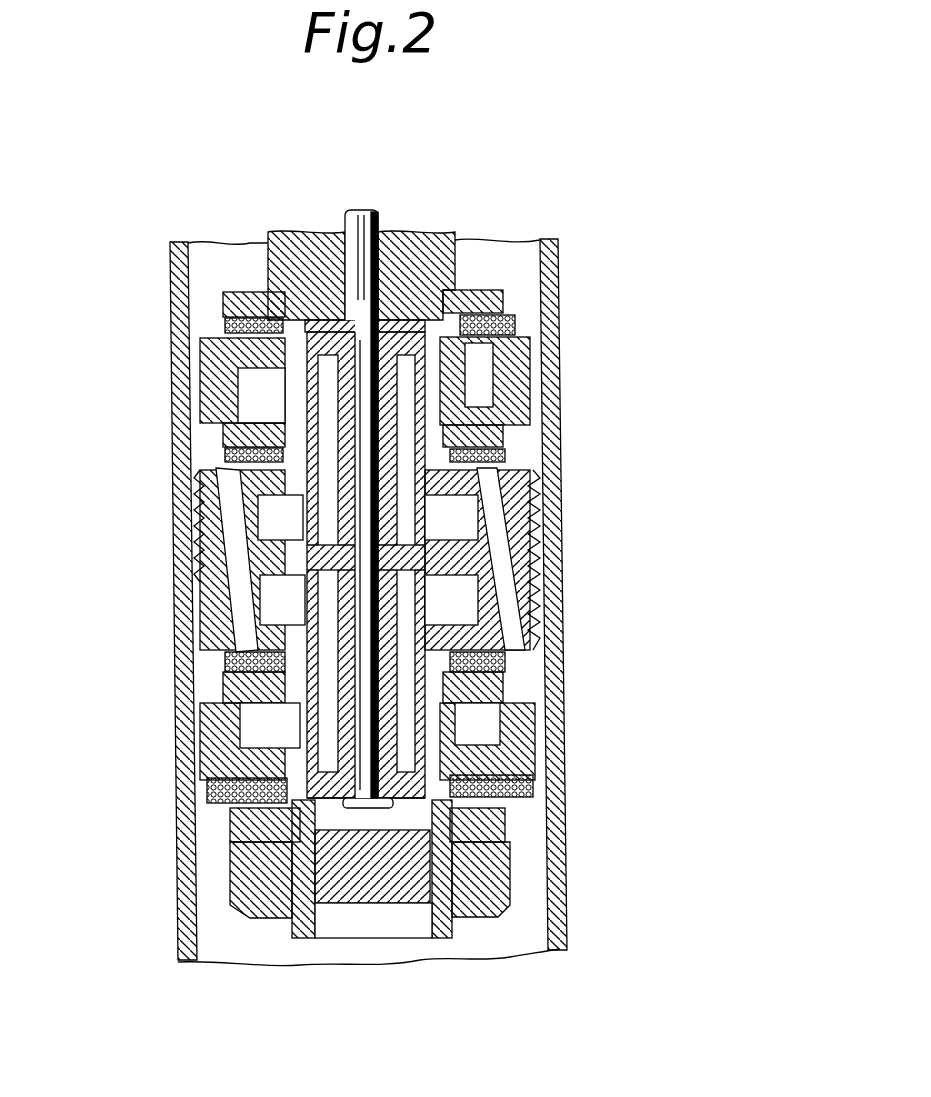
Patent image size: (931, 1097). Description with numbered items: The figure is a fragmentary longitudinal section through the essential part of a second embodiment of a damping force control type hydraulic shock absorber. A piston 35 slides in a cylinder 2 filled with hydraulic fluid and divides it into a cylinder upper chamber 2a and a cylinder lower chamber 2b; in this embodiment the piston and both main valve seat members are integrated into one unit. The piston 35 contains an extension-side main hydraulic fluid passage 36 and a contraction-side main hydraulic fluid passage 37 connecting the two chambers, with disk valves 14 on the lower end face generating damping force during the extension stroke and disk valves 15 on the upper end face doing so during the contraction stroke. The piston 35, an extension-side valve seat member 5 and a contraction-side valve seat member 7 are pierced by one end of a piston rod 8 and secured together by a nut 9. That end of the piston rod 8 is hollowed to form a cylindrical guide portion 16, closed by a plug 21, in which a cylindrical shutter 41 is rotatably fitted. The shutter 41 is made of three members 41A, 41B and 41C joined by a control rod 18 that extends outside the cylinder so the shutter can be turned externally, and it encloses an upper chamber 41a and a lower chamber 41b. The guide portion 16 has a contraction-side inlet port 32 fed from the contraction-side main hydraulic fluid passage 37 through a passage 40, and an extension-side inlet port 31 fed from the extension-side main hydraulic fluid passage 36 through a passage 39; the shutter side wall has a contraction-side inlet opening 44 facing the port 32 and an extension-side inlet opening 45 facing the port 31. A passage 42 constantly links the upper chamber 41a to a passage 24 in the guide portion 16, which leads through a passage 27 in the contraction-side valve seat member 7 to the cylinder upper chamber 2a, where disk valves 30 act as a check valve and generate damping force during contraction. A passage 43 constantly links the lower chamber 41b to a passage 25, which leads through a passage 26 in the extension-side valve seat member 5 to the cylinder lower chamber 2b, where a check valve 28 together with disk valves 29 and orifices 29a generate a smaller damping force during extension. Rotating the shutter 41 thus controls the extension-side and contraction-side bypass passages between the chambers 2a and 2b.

The cylinder 2 is at (550, 240).
The cylinder upper chamber 2a is at (487, 262).
The cylinder lower chamber 2b is at (472, 950).
The extension-side valve seat member 5 is at (513, 757).
The contraction-side valve seat member 7 is at (560, 343).
The piston rod 8 is at (290, 235).
The nut 9 is at (262, 905).
The disk valves 14 is at (230, 672).
The disk valves 15 is at (507, 447).
The guide portion 16 is at (305, 925).
The control rod 18 is at (352, 222).
The plug 21 is at (360, 890).
The passage 24 is at (497, 403).
The passage 25 is at (480, 740).
The passage 26 is at (490, 727).
The passage 27 is at (485, 388).
The check valve 28 is at (540, 778).
The disk valves 29 is at (563, 867).
The orifices 29a is at (543, 783).
The disk valves 30 is at (507, 320).
The extension-side inlet port 31 is at (258, 640).
The contraction-side inlet port 32 is at (505, 545).
The piston 35 is at (533, 520).
The extension-side main hydraulic fluid passage 36 is at (215, 482).
The contraction-side main hydraulic fluid passage 37 is at (555, 662).
The passage 39 is at (270, 595).
The passage 40 is at (463, 502).
The cylindrical shutter 41 is at (252, 494).
The member 41A is at (318, 345).
The upper chamber 41a is at (327, 430).
The member 41B is at (300, 555).
The lower chamber 41b is at (327, 730).
The member 41C is at (293, 793).
The passage 42 is at (510, 362).
The passage 43 is at (510, 712).
The contraction-side inlet opening 44 is at (530, 518).
The extension-side inlet opening 45 is at (510, 600).